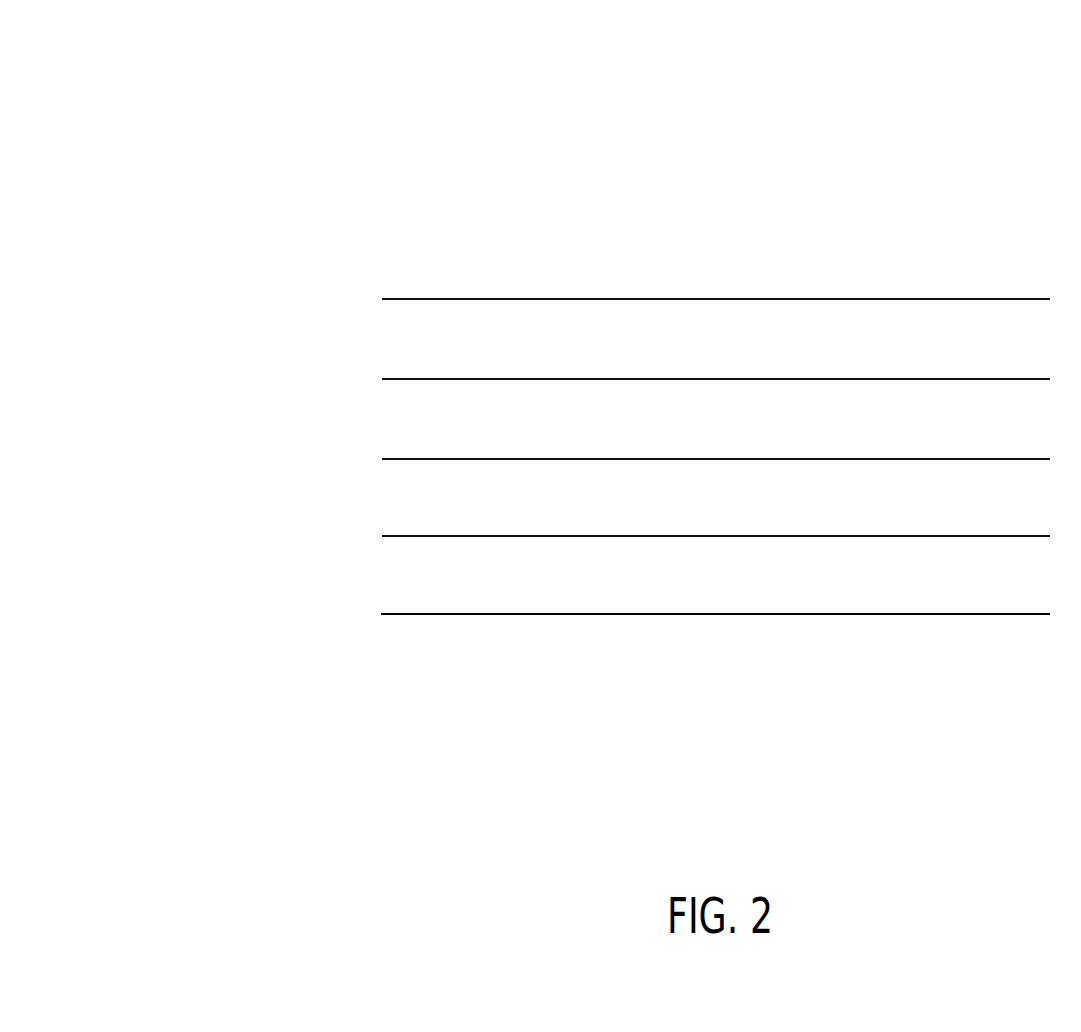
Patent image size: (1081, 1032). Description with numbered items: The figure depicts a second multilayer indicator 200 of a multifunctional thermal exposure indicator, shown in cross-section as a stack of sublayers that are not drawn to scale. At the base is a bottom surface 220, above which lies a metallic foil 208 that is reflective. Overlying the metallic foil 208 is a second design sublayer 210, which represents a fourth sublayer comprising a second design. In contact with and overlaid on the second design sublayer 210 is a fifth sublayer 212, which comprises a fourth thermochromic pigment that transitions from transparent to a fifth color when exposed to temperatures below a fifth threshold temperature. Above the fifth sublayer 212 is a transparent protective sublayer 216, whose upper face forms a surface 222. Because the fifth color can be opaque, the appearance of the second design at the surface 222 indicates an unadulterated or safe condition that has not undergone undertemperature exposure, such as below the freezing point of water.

The second multilayer indicator 200 is at (552, 339).
The surface 222 is at (716, 297).
The transparent protective layer 216 is at (733, 350).
The fifth sublayer 212 is at (733, 430).
The second design sublayer 210 is at (733, 506).
The metallic foil 208 is at (733, 582).
The bottom surface 220 is at (710, 616).